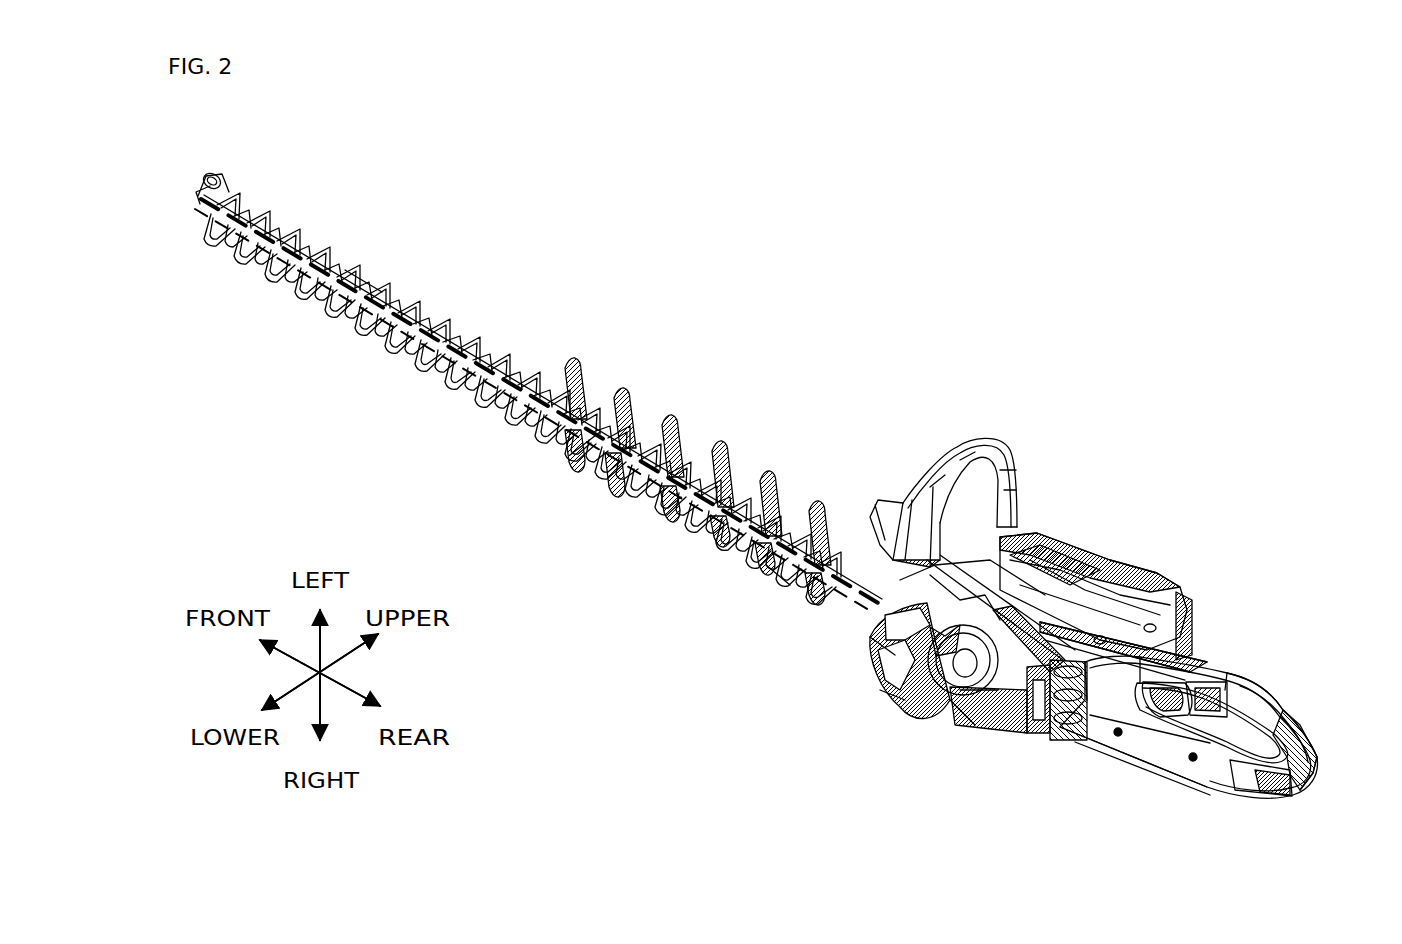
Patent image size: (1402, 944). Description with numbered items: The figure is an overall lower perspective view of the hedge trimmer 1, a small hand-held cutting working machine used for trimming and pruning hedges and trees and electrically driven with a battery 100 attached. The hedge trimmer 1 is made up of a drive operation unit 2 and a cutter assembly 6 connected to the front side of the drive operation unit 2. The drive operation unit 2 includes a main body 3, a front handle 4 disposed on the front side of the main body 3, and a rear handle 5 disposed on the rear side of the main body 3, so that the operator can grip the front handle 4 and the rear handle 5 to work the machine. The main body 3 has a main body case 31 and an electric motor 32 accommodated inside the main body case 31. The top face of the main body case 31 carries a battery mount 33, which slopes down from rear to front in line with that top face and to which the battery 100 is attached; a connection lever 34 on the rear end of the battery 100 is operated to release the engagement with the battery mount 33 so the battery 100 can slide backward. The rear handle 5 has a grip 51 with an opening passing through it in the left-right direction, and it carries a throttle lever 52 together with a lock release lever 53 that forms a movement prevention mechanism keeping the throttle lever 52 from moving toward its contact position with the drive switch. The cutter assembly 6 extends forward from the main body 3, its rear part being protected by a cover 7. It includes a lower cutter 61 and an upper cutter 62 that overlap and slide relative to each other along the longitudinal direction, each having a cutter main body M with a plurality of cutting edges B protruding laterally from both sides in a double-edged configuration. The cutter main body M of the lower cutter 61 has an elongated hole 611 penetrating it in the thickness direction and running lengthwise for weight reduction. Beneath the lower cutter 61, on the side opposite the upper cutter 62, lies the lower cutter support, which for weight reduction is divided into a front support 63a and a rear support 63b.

The hedge trimmer 1 is at (1085, 420).
The drive operation unit 2 is at (998, 772).
The main body 3 is at (975, 700).
The main body case 31 is at (888, 650).
The electric motor 32 is at (1050, 722).
The battery mount 33 is at (1100, 590).
The connection lever 34 is at (1200, 620).
The battery 100 is at (1170, 575).
The front handle 4 is at (956, 455).
The rear handle 5 is at (1212, 660).
The grip 51 is at (1255, 655).
The throttle lever 52 is at (1208, 776).
The lock release lever 53 is at (1305, 710).
The cutter assembly 6 is at (452, 490).
The lower cutter 61 is at (396, 350).
The upper cutter 62 is at (468, 325).
The elongated hole 611 is at (585, 466).
The front support 63a is at (208, 210).
The rear support 63b is at (775, 580).
The cover 7 is at (668, 412).
The cutter main body M is at (328, 312).
The cutting edges B is at (378, 288).